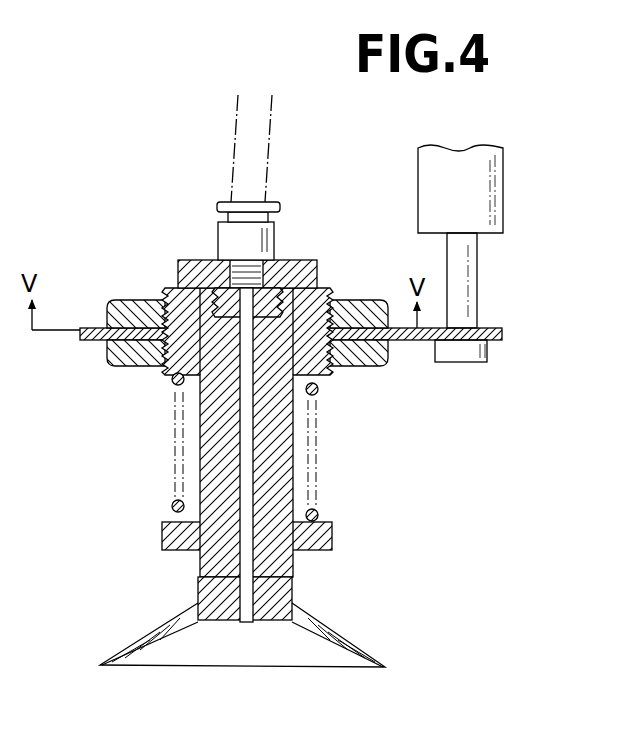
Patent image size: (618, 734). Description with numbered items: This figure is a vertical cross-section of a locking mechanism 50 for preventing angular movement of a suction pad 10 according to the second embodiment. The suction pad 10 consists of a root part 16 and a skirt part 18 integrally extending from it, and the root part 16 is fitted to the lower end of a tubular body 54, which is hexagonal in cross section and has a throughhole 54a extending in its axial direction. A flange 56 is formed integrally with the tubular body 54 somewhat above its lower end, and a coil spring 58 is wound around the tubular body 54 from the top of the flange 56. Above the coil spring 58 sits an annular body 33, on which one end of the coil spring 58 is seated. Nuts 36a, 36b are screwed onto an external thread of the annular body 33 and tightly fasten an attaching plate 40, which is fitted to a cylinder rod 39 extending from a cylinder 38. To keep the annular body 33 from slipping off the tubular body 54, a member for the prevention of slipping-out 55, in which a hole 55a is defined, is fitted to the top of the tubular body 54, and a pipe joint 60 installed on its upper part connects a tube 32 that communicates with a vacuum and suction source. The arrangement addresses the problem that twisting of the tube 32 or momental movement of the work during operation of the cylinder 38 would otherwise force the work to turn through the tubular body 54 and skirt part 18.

The suction pad 10 is at (237, 675).
The root part 16 is at (283, 593).
The skirt part 18 is at (357, 643).
The tube 32 is at (252, 125).
The annular body 33 is at (165, 379).
The nut 36a is at (352, 318).
The nut 36b is at (365, 366).
The cylinder 38 is at (478, 206).
The cylinder rod 39 is at (460, 282).
The attaching plate 40 is at (500, 333).
The locking mechanism 50 is at (155, 443).
The tubular body 54 is at (198, 489).
The throughhole 54a is at (167, 290).
The member for the prevention of slipping-out 55 is at (293, 259).
The hole 55a is at (203, 258).
The flange 56 is at (312, 532).
The coil spring 58 is at (312, 445).
The pipe joint 60 is at (245, 237).